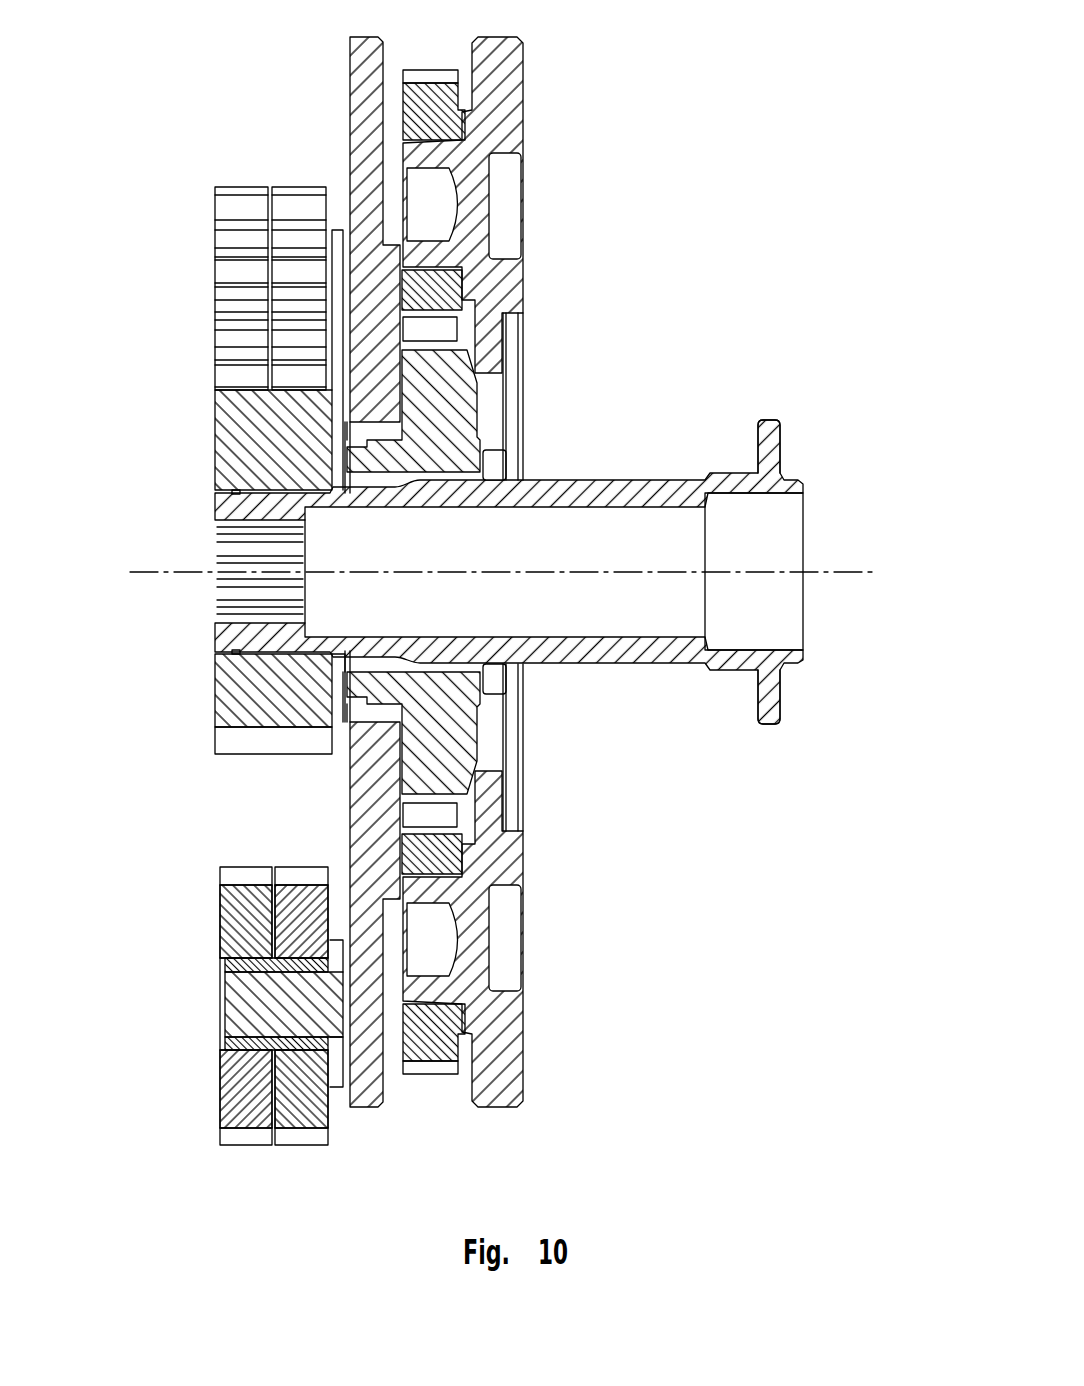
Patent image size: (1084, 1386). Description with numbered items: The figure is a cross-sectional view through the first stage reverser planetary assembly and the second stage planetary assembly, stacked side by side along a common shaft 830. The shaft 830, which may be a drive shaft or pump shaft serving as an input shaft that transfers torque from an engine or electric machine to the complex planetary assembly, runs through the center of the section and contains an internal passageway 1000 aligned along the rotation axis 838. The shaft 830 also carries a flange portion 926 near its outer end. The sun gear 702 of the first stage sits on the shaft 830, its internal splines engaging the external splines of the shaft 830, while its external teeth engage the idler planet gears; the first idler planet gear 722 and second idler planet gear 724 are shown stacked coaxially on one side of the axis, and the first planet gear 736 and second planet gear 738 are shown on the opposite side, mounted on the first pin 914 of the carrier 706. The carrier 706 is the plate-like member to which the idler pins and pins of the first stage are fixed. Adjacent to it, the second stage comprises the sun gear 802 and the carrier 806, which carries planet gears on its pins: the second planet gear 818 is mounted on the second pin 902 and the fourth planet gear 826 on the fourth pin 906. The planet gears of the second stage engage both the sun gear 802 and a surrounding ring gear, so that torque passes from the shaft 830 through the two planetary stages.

The sun gear 702 is at (230, 430).
The carrier 706 is at (352, 70).
The first idler planet gear 722 is at (230, 205).
The second idler planet gear 724 is at (298, 205).
The first planet gear 736 is at (250, 890).
The second planet gear 738 is at (298, 1115).
The sun gear 802 is at (462, 430).
The carrier 806 is at (517, 87).
The second planet gear 818 is at (430, 85).
The fourth planet gear 826 is at (428, 1022).
The shaft 830 is at (801, 472).
The rotation axis 838 is at (158, 572).
The second pin 902 is at (430, 152).
The fourth pin 906 is at (428, 990).
The first pin 914 is at (235, 1000).
The flange portion 926 is at (768, 418).
The internal passageway 1000 is at (804, 600).